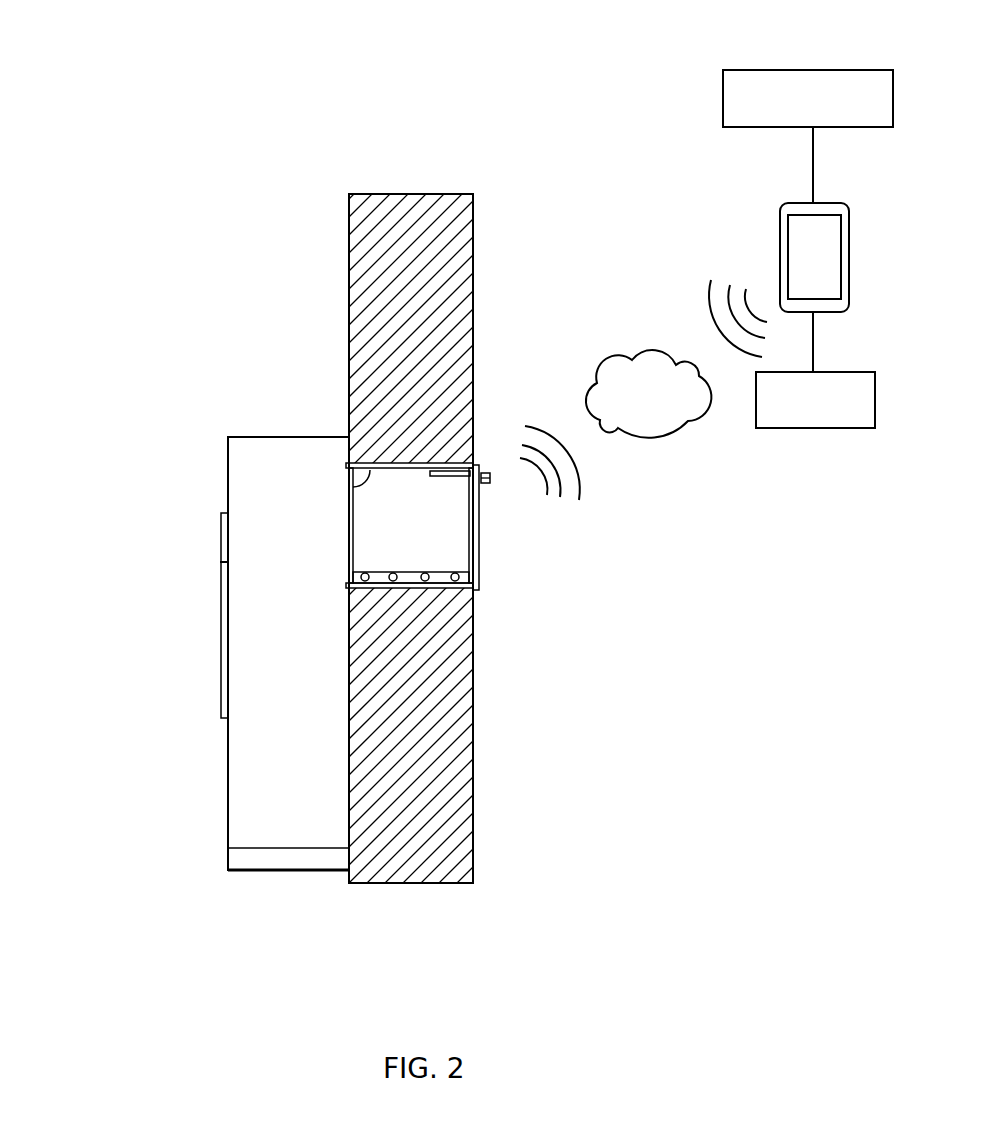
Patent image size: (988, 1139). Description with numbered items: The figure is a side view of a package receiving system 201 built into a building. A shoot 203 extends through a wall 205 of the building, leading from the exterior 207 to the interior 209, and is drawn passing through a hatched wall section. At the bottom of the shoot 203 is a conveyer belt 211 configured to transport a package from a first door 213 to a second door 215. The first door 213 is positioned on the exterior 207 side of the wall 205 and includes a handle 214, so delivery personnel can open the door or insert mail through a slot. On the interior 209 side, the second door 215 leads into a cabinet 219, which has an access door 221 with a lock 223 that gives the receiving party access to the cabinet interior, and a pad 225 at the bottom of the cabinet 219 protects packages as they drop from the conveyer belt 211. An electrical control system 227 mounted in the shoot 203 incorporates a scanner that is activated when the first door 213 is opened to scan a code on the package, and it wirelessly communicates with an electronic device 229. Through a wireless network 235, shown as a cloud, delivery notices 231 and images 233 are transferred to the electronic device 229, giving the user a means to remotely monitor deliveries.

The package receiving system 201 is at (135, 52).
The shoot 203 is at (373, 465).
The wall 205 is at (390, 194).
The exterior 207 is at (543, 213).
The interior 209 is at (215, 348).
The conveyer belt 211 is at (456, 572).
The first door 213 is at (479, 587).
The handle 214 is at (488, 473).
The second door 215 is at (349, 497).
The cabinet 219 is at (228, 465).
The access door 221 is at (221, 681).
The lock 223 is at (220, 563).
The pad 225 is at (330, 848).
The electrical control system 227 is at (462, 476).
The electronic device 229 is at (780, 255).
The delivery notices 231 is at (723, 95).
The images 233 is at (795, 428).
The wireless network 235 is at (645, 438).